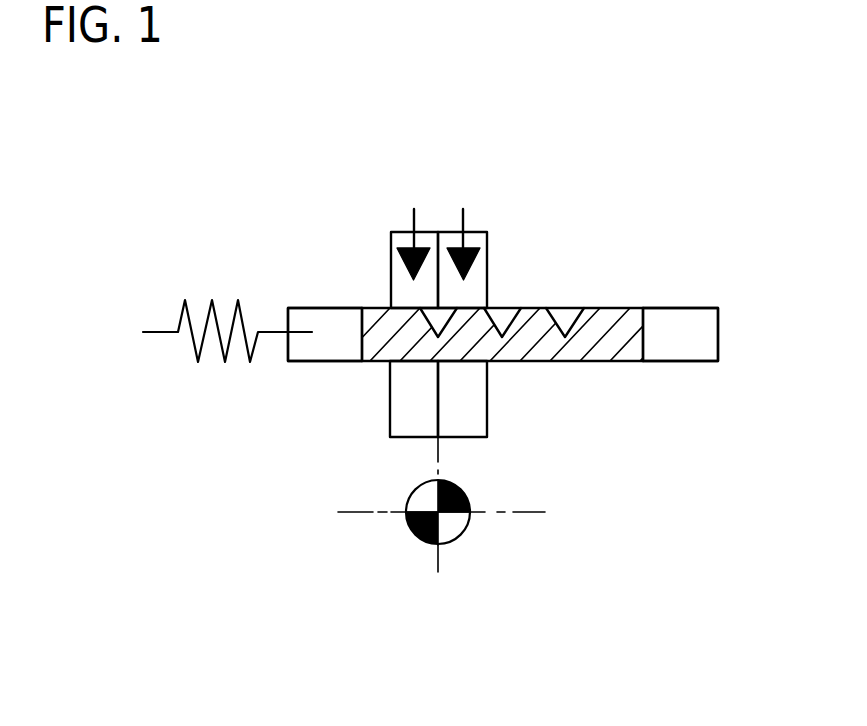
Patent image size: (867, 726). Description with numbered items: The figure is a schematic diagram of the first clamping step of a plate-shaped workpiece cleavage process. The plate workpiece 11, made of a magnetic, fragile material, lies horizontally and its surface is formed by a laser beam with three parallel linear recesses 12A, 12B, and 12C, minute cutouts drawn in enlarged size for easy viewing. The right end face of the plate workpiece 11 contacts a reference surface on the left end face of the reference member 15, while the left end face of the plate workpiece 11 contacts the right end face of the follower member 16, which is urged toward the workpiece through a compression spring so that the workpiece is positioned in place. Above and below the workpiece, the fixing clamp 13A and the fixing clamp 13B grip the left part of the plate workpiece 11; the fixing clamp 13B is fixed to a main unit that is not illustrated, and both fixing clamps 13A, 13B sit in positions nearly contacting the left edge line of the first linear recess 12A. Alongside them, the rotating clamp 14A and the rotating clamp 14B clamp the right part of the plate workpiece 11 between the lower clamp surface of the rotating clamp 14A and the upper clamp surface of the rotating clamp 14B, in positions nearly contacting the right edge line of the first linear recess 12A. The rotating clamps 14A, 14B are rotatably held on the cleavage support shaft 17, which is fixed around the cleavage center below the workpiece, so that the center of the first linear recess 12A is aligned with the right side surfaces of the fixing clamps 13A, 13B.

The plate workpiece 11 is at (540, 308).
The first linear recess 12A is at (438, 308).
The second linear recess 12B is at (505, 307).
The third linear recess 12C is at (563, 307).
The fixing clamp 13A is at (398, 240).
The fixing clamp 13B is at (402, 407).
The rotating clamp 14A is at (483, 240).
The rotating clamp 14B is at (475, 410).
The reference member 15 is at (692, 353).
The follower member 16 is at (322, 315).
The cleavage support shaft 17 is at (440, 514).